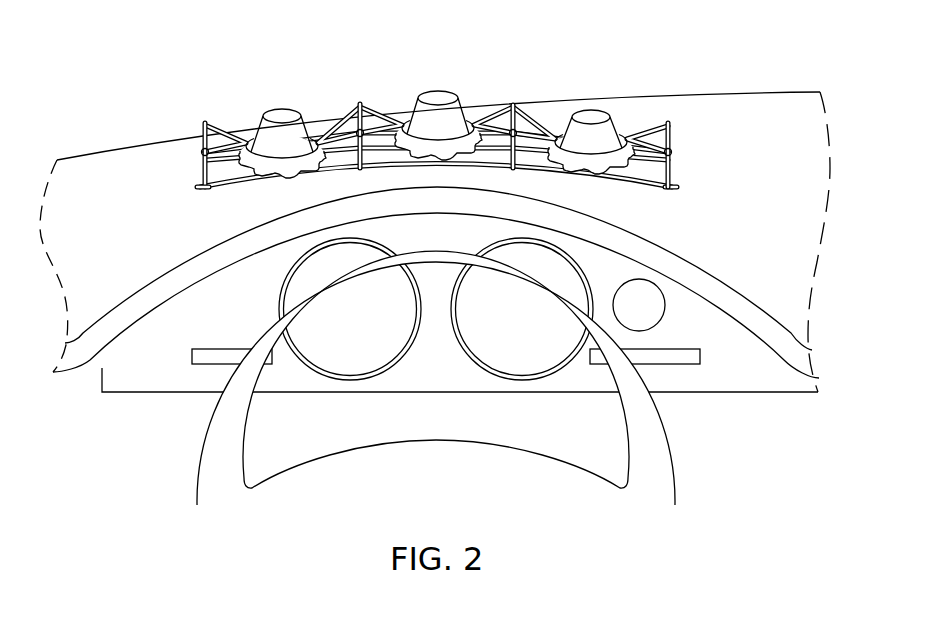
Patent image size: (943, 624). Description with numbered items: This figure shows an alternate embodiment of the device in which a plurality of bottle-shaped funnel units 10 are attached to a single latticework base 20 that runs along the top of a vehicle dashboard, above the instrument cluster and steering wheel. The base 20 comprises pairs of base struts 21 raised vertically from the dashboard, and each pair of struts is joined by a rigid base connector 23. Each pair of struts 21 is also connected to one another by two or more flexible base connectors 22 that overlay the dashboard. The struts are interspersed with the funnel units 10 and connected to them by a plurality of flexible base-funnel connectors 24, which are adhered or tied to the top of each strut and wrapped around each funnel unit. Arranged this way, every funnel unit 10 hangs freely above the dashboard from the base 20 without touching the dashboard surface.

The funnel unit 10 is at (281, 108).
The latticework base 20 is at (673, 165).
The base strut 21 is at (668, 121).
The flexible base connector 22 is at (519, 105).
The rigid base connector 23 is at (215, 124).
The flexible base-funnel connector 24 is at (488, 124).